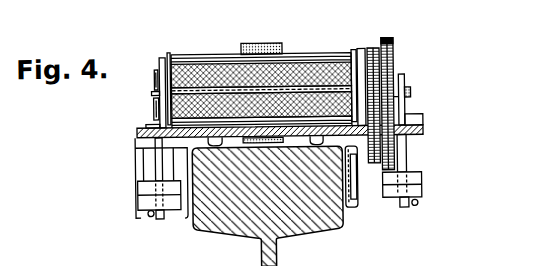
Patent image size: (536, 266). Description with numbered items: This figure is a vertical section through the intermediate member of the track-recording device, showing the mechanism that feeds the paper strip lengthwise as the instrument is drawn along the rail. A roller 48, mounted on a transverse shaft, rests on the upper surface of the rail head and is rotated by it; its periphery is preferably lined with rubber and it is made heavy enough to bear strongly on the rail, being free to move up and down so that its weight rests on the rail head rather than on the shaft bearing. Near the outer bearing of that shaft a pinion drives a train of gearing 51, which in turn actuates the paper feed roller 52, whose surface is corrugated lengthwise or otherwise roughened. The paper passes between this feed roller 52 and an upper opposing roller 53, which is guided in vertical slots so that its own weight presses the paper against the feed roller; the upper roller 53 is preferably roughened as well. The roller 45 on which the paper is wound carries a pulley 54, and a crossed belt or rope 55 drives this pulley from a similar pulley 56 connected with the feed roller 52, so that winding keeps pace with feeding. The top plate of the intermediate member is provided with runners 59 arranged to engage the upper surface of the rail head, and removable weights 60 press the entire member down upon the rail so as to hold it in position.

The roller 45 is at (301, 53).
The roller 48 is at (265, 43).
The train of gearing 51 is at (390, 40).
The paper feed roller 52 is at (322, 102).
The upper opposing roller 53 is at (215, 73).
The pulley 54 is at (156, 72).
The crossed belt or rope 55 is at (157, 96).
The pulley 56 is at (157, 116).
The runners 59 is at (291, 161).
The removable weights 60 is at (140, 199).